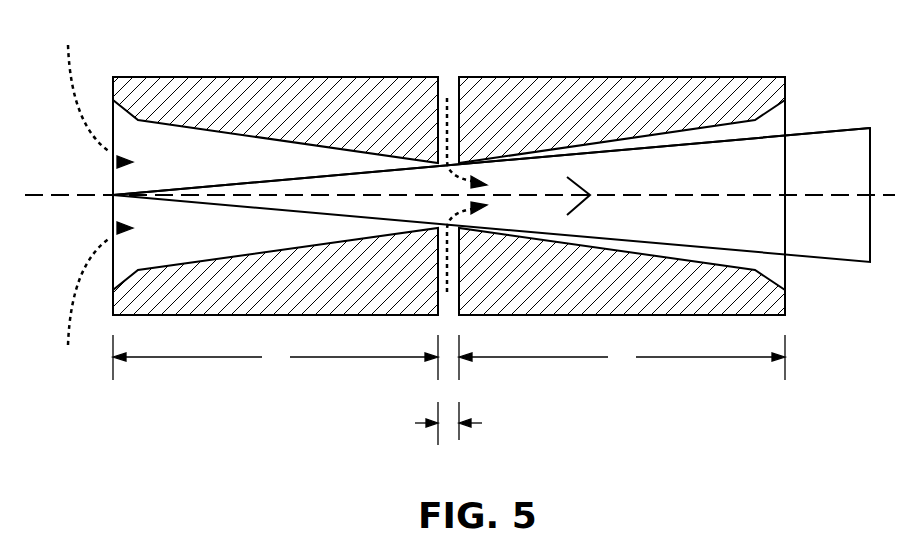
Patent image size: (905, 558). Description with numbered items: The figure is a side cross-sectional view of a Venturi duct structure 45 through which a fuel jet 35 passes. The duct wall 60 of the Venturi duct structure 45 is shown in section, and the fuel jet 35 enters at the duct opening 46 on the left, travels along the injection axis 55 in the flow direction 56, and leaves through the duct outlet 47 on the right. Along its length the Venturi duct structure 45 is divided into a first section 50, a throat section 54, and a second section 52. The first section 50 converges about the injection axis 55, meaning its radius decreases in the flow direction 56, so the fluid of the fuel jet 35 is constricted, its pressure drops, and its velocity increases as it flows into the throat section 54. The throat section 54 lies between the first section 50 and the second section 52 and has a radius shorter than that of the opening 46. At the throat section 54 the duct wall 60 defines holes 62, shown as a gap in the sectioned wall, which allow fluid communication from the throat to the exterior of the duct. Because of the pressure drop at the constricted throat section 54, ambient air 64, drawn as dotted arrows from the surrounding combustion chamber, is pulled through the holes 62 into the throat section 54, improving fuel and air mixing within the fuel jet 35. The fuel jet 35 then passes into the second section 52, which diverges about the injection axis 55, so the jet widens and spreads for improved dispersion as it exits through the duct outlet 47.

The fuel jet 35 is at (808, 133).
The Venturi duct structure 45 is at (449, 159).
The duct opening 46 is at (113, 188).
The duct outlet 47 is at (786, 265).
The first section 50 is at (275, 357).
The second section 52 is at (622, 357).
The throat section 54 is at (459, 440).
The injection axis 55 is at (700, 195).
The flow direction 56 is at (579, 183).
The duct wall 60 is at (283, 104).
The holes 62 is at (445, 67).
The ambient air 64 is at (78, 105).